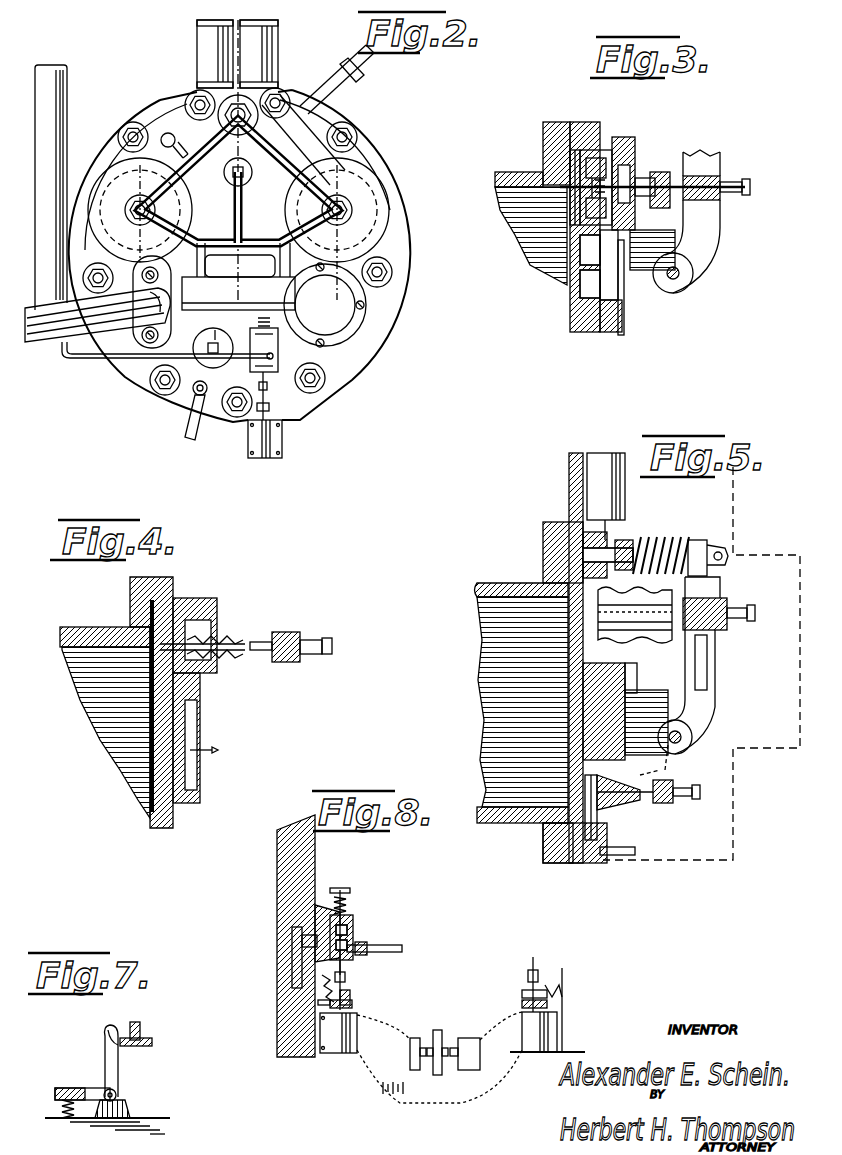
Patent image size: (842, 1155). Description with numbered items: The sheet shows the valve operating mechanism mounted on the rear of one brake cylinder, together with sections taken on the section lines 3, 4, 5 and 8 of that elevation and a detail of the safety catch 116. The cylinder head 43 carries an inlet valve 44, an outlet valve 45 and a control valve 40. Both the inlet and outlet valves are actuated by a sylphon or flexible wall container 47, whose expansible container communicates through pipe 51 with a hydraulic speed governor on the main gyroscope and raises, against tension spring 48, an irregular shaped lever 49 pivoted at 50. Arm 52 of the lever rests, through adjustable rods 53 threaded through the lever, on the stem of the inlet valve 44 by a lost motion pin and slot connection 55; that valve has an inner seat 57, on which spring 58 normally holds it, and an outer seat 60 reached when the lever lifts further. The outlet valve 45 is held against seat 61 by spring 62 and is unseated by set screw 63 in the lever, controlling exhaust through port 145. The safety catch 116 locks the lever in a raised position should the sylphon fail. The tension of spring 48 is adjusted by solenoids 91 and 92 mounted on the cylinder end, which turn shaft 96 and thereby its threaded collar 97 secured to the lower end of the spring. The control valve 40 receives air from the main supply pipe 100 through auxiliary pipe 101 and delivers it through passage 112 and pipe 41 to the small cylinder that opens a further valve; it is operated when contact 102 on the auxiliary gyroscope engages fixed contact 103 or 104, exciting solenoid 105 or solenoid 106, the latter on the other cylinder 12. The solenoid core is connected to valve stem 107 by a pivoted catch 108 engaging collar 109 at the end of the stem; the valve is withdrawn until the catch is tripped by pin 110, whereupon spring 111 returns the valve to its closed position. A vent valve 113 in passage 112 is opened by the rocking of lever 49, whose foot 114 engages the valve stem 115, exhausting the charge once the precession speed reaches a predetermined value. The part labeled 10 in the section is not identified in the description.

In FIG. 2, the section line 3 is at (150, 362).
In FIG. 2, the section line 4 is at (337, 266).
In FIG. 2, the section line 5 is at (238, 20).
In FIG. 2, the section line 8 is at (263, 470).
In FIG. 5, the cone valve (10') 10 is at (625, 805).
In FIG. 5, the cylinder 12 is at (541, 658).
In FIG. 2, the control valve 40 is at (269, 386).
In FIG. 8, the control valve 40 is at (353, 920).
In FIG. 2, the pipe 41 is at (198, 436).
In FIG. 5, the pipe 41 is at (628, 855).
In FIG. 2, the cylinder head 43 is at (408, 243).
In FIG. 3, the inlet valve 44 is at (543, 160).
In FIG. 2, the outlet valve 45 is at (352, 210).
In FIG. 4, the outlet valve 45 is at (130, 618).
In FIG. 5, the sylphon 47 is at (648, 652).
In FIG. 5, the spring 48 is at (670, 546).
In FIG. 2, the lever 49 is at (282, 160).
In FIG. 3, the lever 49 is at (720, 160).
In FIG. 4, the lever 49 is at (280, 632).
In FIG. 5, the lever 49 is at (715, 650).
In FIG. 7, the lever 49 is at (140, 1028).
In FIG. 2, the pivot 50 is at (300, 292).
In FIG. 3, the pivot 50 is at (680, 278).
In FIG. 5, the pivot 50 is at (680, 742).
In FIG. 2, the pipe 51 is at (345, 72).
In FIG. 3, the arm 52 is at (720, 200).
In FIG. 3, the adjustable rod 53 is at (668, 170).
In FIG. 3, the lost motion connection 55 is at (635, 152).
In FIG. 3, the inner seat 57 is at (575, 215).
In FIG. 3, the spring 58 is at (572, 200).
In FIG. 3, the outer seat 60 is at (596, 160).
In FIG. 4, the seat 61 is at (183, 598).
In FIG. 4, the spring 62 is at (205, 630).
In FIG. 4, the set screw 63 is at (258, 652).
In FIG. 2, the solenoid 91 is at (197, 44).
In FIG. 2, the solenoid 92 is at (278, 42).
In FIG. 5, the solenoid 92 is at (612, 460).
In FIG. 5, the shaft 96 is at (622, 545).
In FIG. 5, the collar 97 is at (630, 572).
In FIG. 2, the main supply pipe 100 is at (40, 342).
In FIG. 2, the auxiliary pipe 101 is at (103, 362).
In FIG. 8, the auxiliary pipe 101 is at (385, 945).
In FIG. 8, the contact 102 is at (437, 1030).
In FIG. 8, the fixed contact 103 is at (411, 1054).
In FIG. 8, the fixed contact 104 is at (469, 1054).
In FIG. 2, the solenoid 105 is at (282, 450).
In FIG. 8, the solenoid 105 is at (357, 1040).
In FIG. 8, the solenoid 106 is at (547, 1042).
In FIG. 8, the valve stem 107 is at (345, 965).
In FIG. 8, the pivoted catch 108 is at (345, 977).
In FIG. 8, the collar 109 is at (350, 997).
In FIG. 8, the pin 110 is at (318, 1002).
In FIG. 8, the spring 111 is at (336, 892).
In FIG. 2, the passage 112 is at (248, 330).
In FIG. 5, the passage 112 is at (543, 845).
In FIG. 8, the passage 112 is at (292, 945).
In FIG. 2, the vent valve 113 is at (220, 365).
In FIG. 5, the vent valve 113 is at (585, 783).
In FIG. 2, the foot 114 is at (193, 345).
In FIG. 5, the foot 114 is at (673, 803).
In FIG. 5, the valve stem 115 is at (649, 763).
In FIG. 2, the safety catch 116 is at (186, 140).
In FIG. 7, the safety catch 116 is at (105, 1053).
In FIG. 4, the port 145 is at (200, 735).